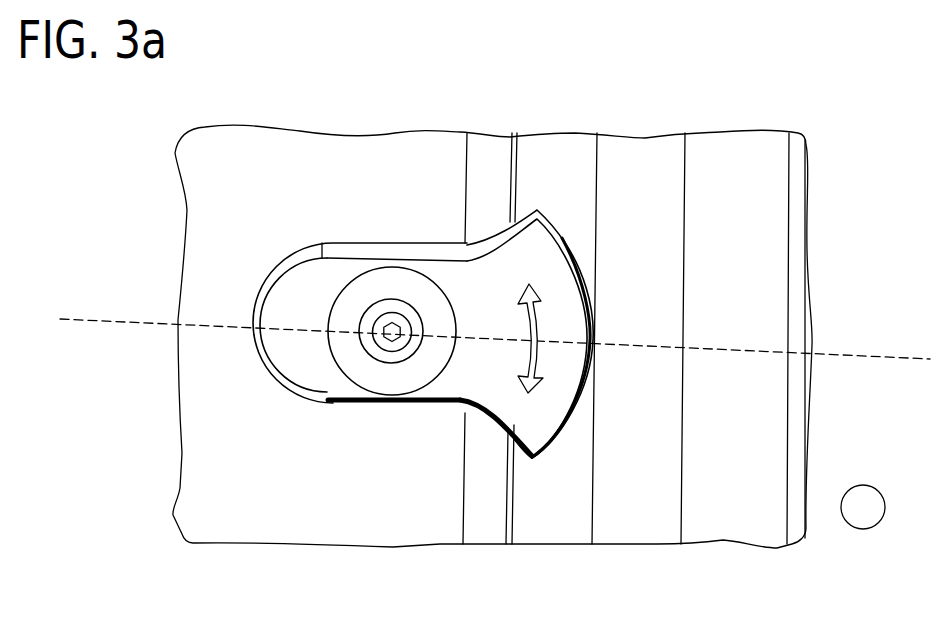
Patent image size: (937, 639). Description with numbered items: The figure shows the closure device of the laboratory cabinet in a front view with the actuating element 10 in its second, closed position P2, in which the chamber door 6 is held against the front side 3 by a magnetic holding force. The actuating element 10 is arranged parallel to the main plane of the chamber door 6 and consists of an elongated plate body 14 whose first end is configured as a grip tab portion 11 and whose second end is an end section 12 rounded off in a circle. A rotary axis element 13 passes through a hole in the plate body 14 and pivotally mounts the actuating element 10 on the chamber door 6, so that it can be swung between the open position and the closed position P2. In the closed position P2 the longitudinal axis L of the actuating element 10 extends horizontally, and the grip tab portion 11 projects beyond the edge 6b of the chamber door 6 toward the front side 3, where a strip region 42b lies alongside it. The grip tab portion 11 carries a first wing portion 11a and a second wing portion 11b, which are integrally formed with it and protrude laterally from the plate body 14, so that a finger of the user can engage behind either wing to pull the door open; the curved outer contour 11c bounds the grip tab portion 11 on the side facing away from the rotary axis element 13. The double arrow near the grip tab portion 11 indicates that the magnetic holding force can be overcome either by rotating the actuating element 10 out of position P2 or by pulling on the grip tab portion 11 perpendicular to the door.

The front side 3 is at (727, 165).
The chamber door 6 is at (200, 172).
The edge of the chamber door 6b is at (512, 528).
The actuating element 10 is at (413, 247).
The grip tab portion 11 is at (562, 362).
The first wing portion 11a is at (537, 210).
The second wing portion 11b is at (538, 458).
The lever edge 11c is at (577, 257).
The end section 12 is at (272, 310).
The rotary axis element 13 is at (368, 344).
The plate body 14 is at (367, 268).
The groove 42b is at (634, 165).
The longitudinal axis L is at (495, 356).
The second, closed position P2 is at (863, 507).